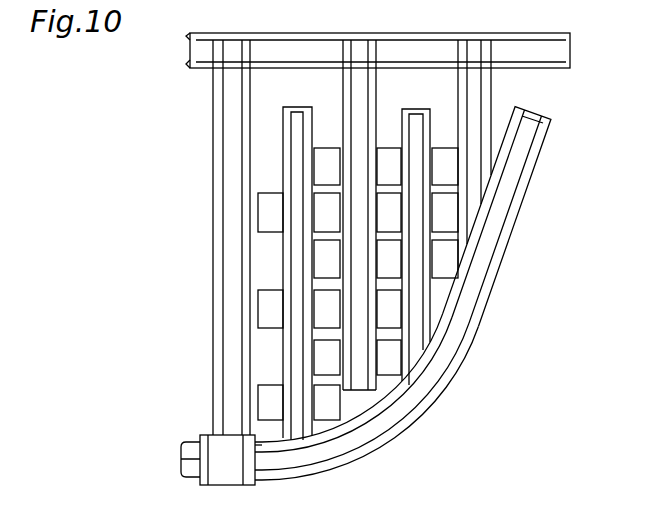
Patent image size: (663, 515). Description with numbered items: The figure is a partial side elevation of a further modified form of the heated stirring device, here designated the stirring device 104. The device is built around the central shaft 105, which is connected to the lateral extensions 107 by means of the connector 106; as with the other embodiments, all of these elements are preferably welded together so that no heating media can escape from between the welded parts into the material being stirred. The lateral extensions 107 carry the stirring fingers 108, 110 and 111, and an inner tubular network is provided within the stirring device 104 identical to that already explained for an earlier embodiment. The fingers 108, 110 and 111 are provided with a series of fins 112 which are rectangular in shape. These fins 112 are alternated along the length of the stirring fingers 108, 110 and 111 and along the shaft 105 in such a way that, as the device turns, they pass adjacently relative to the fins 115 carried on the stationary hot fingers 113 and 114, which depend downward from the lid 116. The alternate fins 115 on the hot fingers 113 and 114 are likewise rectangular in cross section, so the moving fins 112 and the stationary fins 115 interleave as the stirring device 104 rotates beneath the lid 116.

The stirring device 104 is at (355, 445).
The central shaft 105 is at (228, 160).
The connector 106 is at (224, 470).
The lateral extensions 107 is at (187, 482).
The stirring finger 108 is at (283, 388).
The stirring finger 110 is at (413, 343).
The stirring finger 111 is at (517, 170).
The fins 112 is at (257, 313).
The stationary hot finger 113 is at (473, 97).
The stationary hot finger 114 is at (357, 95).
The fins 115 is at (378, 155).
The lid 116 is at (560, 52).